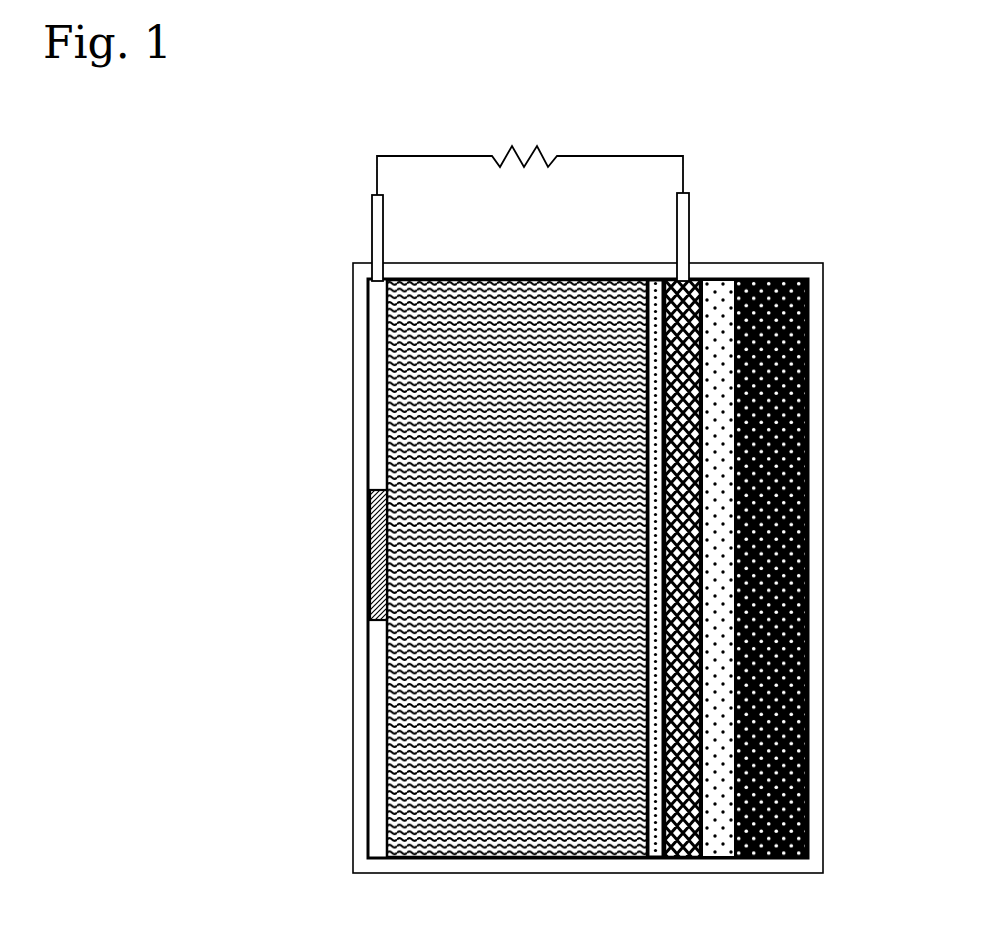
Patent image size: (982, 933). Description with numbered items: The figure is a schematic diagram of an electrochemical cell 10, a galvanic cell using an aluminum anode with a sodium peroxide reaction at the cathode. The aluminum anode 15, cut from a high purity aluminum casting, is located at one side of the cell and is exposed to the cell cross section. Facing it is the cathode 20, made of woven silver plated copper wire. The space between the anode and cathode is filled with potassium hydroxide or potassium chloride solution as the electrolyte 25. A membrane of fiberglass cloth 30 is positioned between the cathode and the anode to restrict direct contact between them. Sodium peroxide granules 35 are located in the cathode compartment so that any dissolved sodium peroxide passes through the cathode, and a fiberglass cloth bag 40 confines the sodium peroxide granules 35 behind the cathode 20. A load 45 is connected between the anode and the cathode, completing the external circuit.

The electrochemical cell 10 is at (803, 252).
The aluminum anode 15 is at (370, 548).
The cathode 20 is at (697, 279).
The electrolyte 25 is at (427, 280).
The membrane of fiberglass cloth 30 is at (662, 856).
The sodium peroxide granules 35 is at (805, 390).
The fiberglass cloth bag 40 is at (713, 856).
The load 45 is at (518, 136).